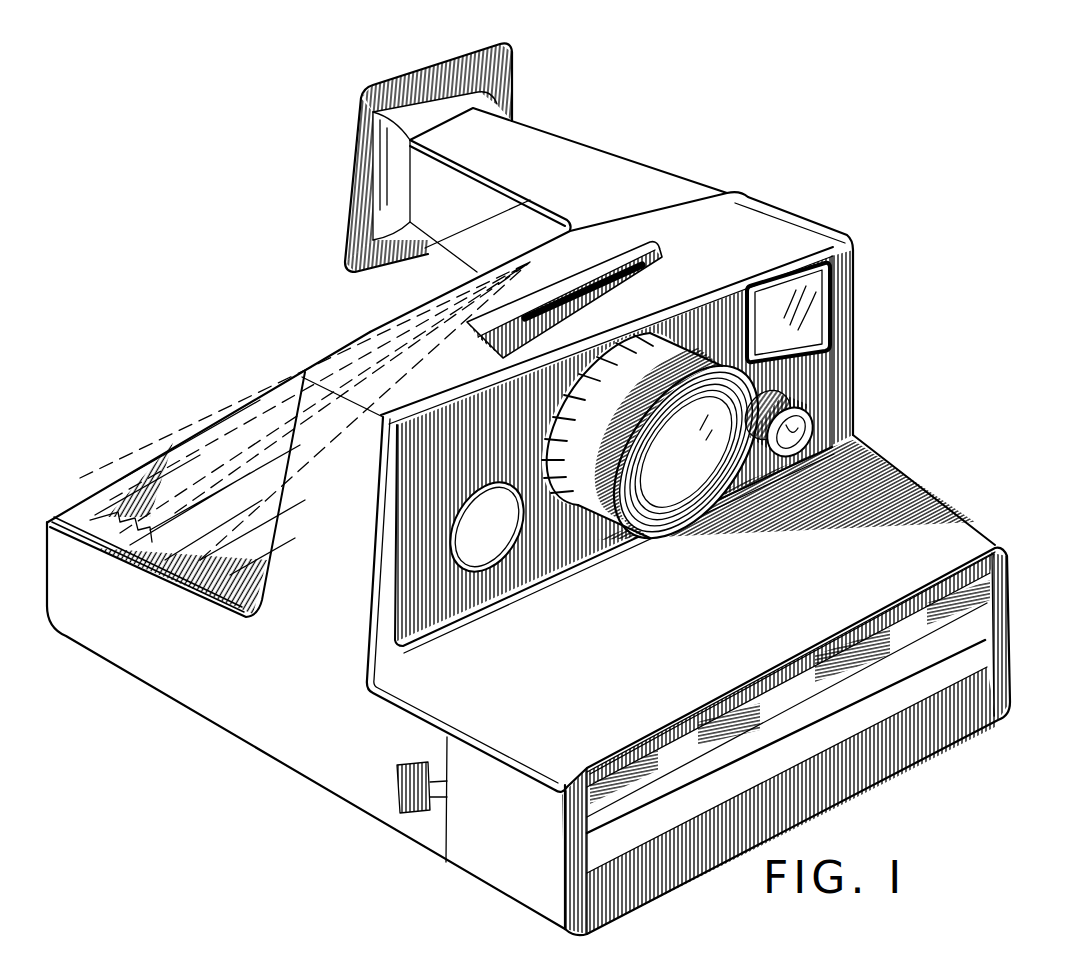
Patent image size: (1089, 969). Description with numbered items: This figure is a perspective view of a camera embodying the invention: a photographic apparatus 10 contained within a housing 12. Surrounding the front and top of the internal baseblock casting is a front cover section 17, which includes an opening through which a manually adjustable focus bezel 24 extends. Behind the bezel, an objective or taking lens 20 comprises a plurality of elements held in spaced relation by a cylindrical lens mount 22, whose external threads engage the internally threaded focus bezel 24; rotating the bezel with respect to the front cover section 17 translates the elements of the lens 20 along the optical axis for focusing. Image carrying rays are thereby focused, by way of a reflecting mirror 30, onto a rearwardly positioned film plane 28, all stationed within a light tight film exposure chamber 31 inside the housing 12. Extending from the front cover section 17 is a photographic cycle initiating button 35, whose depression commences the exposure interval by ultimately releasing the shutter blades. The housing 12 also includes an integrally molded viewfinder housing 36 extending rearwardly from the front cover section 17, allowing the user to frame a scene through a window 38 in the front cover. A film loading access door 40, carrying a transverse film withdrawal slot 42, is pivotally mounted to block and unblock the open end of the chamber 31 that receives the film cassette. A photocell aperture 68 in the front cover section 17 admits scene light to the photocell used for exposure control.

The photographic apparatus 10 is at (893, 440).
The housing 12 is at (290, 669).
The front cover section 17 is at (968, 520).
The objective lens 20 is at (641, 498).
The cylindrical lens mount 22 is at (714, 400).
The focus bezel 24 is at (622, 476).
The film plane 28 is at (250, 511).
The reflecting mirror 30 is at (230, 427).
The film exposure chamber 31 is at (335, 511).
The photographic cycle initiating button 35 is at (482, 552).
The viewfinder housing 36 is at (548, 133).
The window 38 is at (818, 313).
The film loading access door 40 is at (517, 882).
The film withdrawal slot 42 is at (815, 742).
The photocell aperture 68 is at (818, 425).